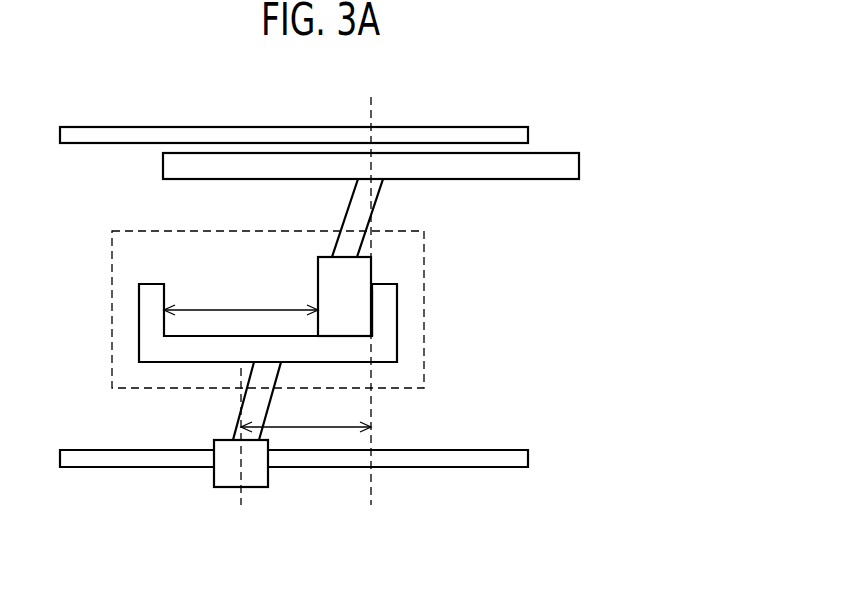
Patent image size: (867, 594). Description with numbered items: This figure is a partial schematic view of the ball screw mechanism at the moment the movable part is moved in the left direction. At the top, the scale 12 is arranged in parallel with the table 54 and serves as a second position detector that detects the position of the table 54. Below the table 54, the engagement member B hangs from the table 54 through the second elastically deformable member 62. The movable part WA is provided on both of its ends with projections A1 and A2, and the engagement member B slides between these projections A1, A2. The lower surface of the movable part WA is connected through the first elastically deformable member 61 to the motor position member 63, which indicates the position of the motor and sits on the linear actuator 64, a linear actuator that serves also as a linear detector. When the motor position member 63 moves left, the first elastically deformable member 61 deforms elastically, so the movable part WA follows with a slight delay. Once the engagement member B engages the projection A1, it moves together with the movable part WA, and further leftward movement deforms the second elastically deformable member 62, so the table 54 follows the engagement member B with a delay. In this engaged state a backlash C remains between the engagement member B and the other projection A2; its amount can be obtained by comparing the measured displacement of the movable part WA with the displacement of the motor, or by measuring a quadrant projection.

The scale 12 is at (79, 133).
The table 54 is at (173, 167).
The second elastically deformable member 62 is at (353, 206).
The first elastically deformable member 61 is at (233, 433).
The motor position member 63 is at (227, 478).
The linear actuator 64 is at (510, 458).
The engagement member B is at (328, 281).
The backlash C is at (207, 308).
The projection A1 is at (385, 303).
The projection A2 is at (150, 320).
The movable part WA is at (333, 350).